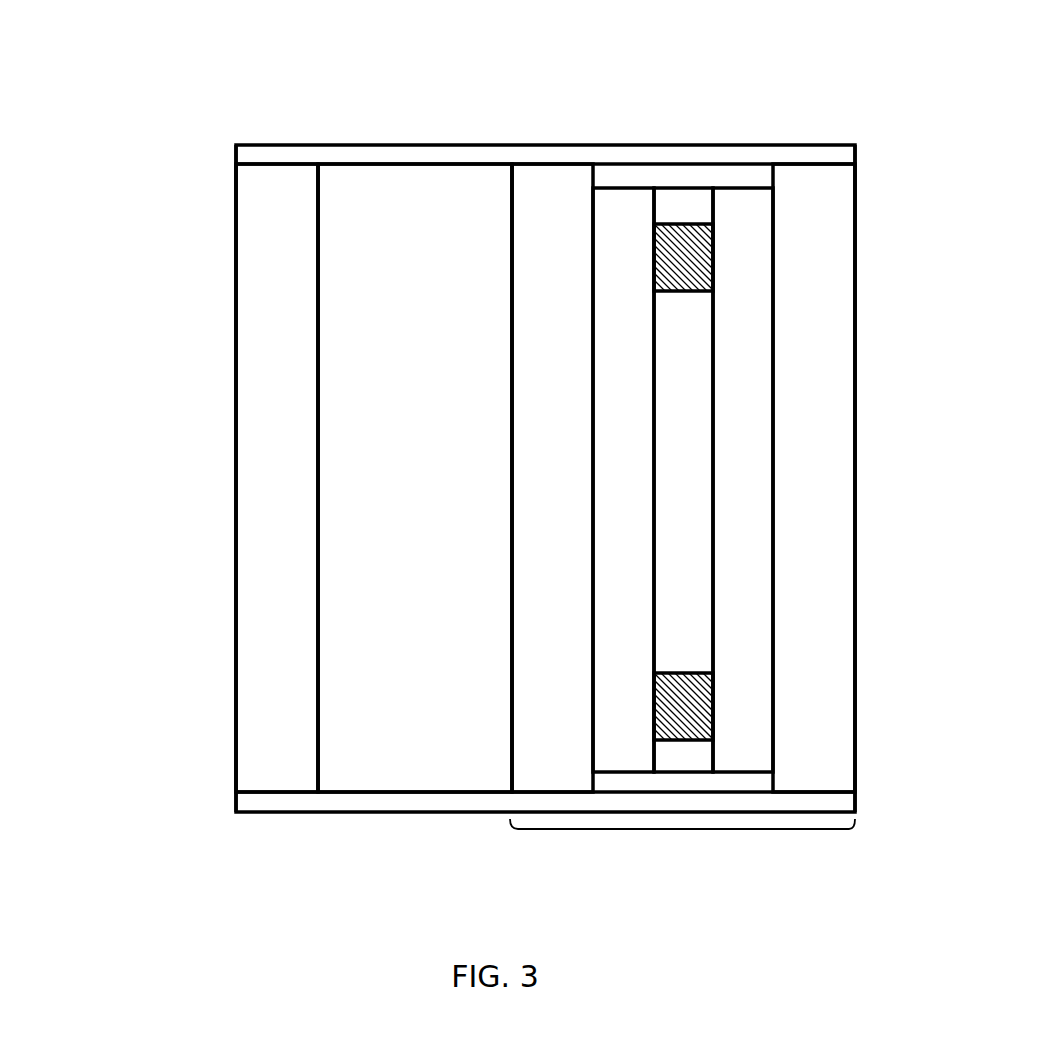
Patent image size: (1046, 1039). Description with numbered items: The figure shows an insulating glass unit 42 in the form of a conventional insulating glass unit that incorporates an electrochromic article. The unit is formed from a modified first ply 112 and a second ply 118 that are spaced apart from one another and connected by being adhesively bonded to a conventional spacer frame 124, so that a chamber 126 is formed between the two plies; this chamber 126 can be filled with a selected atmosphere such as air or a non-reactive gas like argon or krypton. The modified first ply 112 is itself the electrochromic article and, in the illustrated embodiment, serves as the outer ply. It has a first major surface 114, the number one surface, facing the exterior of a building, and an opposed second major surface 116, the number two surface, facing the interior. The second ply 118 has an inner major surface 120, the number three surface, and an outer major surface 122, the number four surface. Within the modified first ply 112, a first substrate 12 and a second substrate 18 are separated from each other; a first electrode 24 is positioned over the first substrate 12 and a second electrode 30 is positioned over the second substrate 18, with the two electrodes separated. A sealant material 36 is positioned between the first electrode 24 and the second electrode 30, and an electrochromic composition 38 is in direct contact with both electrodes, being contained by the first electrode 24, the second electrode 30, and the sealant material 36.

The insulating glass unit 42 is at (125, 153).
The inner major surface 120 is at (314, 197).
The second major surface 116 is at (505, 193).
The sealant material 36 is at (675, 235).
The spacer frame 124 is at (818, 155).
The outer major surface 122 is at (234, 478).
The first major surface 114 is at (858, 482).
The second ply 118 is at (277, 478).
The chamber 126 is at (415, 478).
The second substrate 18 is at (552, 478).
The second electrode 30 is at (623, 480).
The electrochromic composition 38 is at (683, 480).
The first electrode 24 is at (743, 480).
The first substrate 12 is at (814, 478).
The modified first ply 112 is at (682, 841).